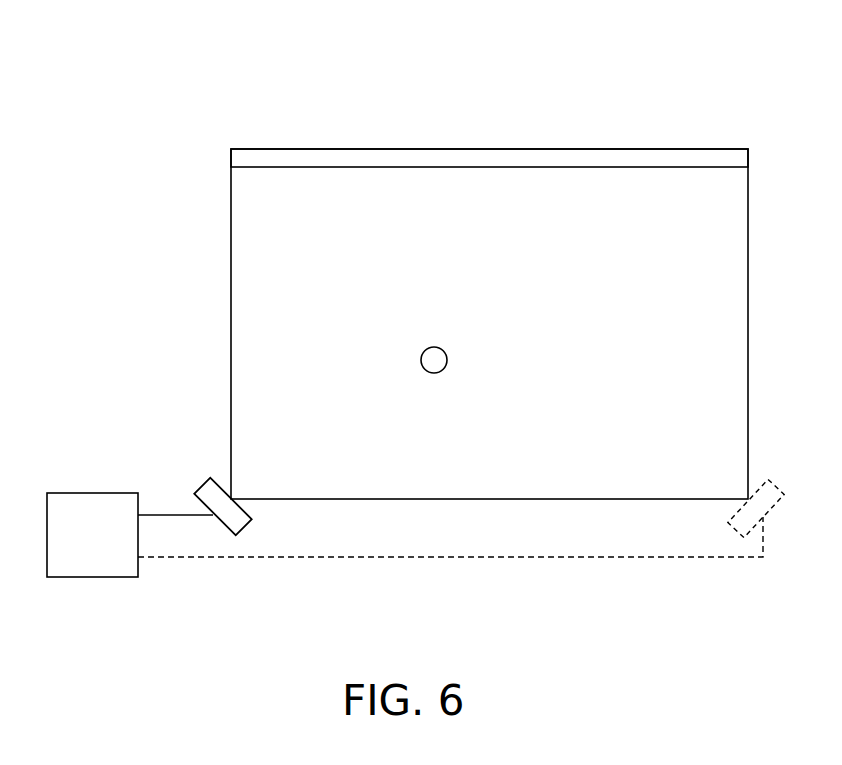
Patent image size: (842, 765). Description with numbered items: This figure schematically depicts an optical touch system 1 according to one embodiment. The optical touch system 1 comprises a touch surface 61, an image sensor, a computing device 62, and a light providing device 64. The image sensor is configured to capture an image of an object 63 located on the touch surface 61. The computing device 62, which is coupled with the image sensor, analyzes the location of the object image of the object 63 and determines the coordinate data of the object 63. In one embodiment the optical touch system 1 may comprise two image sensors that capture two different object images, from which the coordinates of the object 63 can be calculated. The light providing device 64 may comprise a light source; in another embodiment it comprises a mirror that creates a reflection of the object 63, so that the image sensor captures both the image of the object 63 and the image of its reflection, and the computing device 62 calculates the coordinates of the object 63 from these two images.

The optical touch system 1 is at (109, 60).
The touch surface 61 is at (605, 335).
The computing device 62 is at (93, 563).
The object 63 is at (434, 346).
The light providing device 64 is at (593, 158).